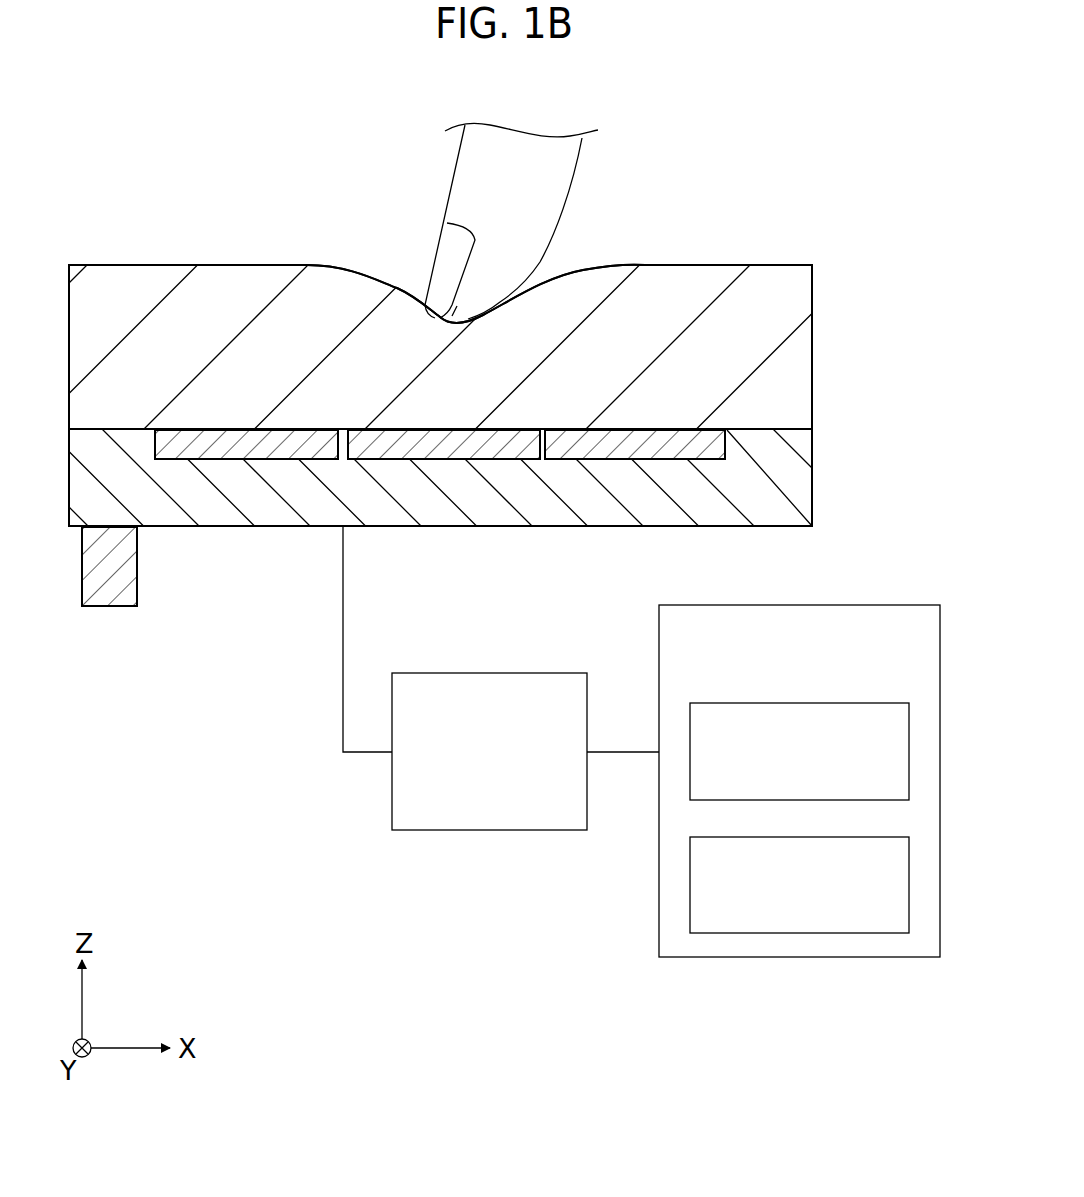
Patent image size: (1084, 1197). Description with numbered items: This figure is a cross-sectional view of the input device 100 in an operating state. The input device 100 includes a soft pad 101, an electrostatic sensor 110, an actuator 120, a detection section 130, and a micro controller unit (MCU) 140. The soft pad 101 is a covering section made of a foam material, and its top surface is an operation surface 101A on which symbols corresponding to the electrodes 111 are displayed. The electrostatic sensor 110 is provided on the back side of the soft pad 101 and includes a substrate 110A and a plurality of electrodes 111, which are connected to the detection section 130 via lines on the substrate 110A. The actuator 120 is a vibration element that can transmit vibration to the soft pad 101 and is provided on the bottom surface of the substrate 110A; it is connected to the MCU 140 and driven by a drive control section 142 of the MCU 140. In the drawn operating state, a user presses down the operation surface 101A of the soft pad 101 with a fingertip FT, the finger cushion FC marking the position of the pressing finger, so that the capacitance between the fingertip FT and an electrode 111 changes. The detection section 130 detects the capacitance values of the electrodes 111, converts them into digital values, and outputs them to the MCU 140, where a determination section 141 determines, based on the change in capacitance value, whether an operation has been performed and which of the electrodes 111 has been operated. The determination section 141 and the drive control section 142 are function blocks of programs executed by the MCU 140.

The input device 100 is at (872, 129).
The soft pad 101 is at (812, 344).
The operation surface 101A is at (717, 265).
The electrostatic sensor 110 is at (812, 450).
The substrate 110A is at (812, 500).
The electrodes 111 is at (623, 460).
The actuator 120 is at (122, 606).
The detection section 130 is at (497, 673).
The micro controller unit (MCU) 140 is at (850, 605).
The determination section 141 is at (833, 703).
The drive control section 142 is at (833, 837).
The fingertip FT is at (457, 314).
The finger cushion FC is at (516, 286).